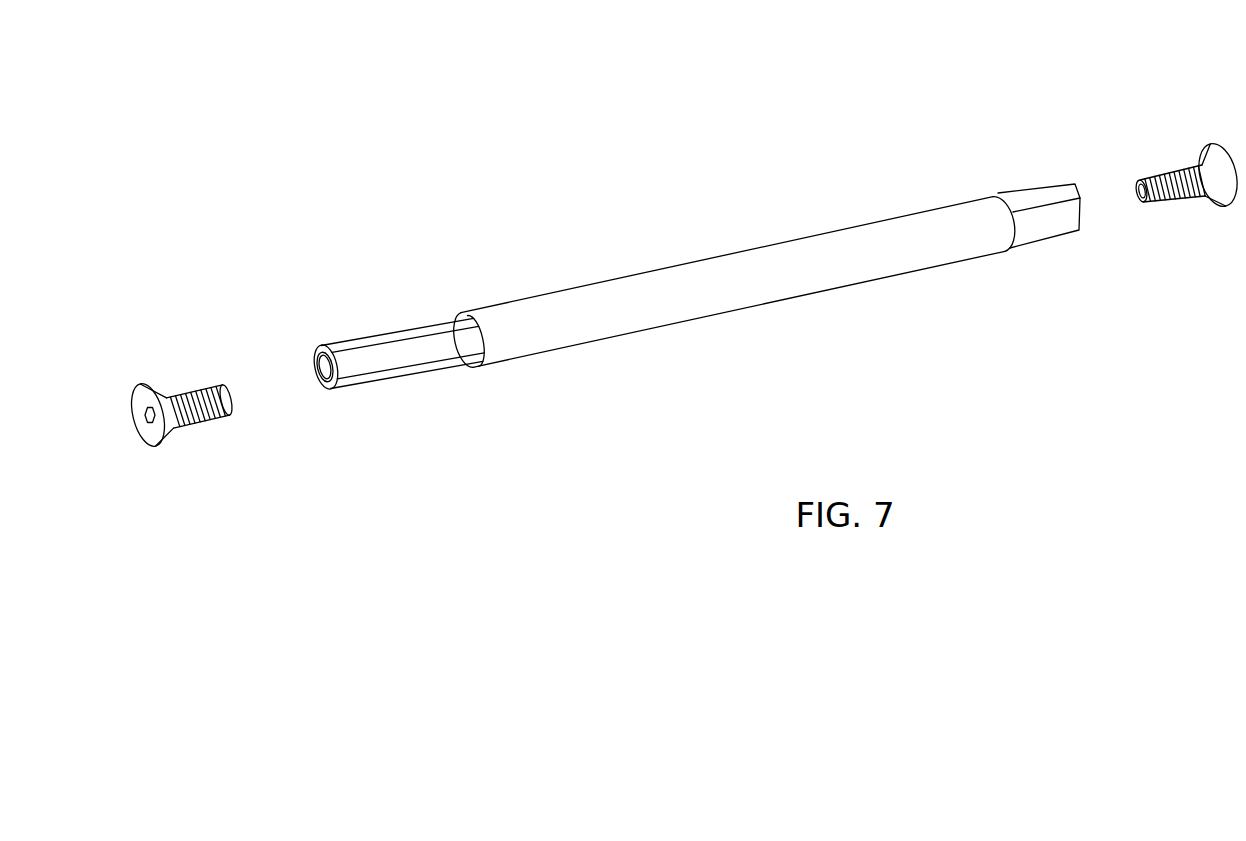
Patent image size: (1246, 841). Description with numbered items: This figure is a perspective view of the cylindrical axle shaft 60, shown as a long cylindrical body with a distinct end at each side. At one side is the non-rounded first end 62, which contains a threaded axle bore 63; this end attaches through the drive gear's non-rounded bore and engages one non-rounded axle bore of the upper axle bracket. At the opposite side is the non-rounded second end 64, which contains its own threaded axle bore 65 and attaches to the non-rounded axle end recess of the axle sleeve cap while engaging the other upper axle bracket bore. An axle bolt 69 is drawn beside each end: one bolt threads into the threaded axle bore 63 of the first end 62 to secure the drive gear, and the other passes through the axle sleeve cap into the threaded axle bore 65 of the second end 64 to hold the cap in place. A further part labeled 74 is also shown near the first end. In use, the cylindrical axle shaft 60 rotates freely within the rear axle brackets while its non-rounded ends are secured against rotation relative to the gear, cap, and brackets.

The cylindrical axle shaft 60 is at (388, 113).
The non-rounded first end 62 is at (400, 362).
The threaded axle bore 63 is at (322, 368).
The non-rounded second end 64 is at (1045, 227).
The threaded axle bore 65 is at (1082, 215).
The axle bolt 69 is at (1180, 165).
The screw 74 is at (200, 420).